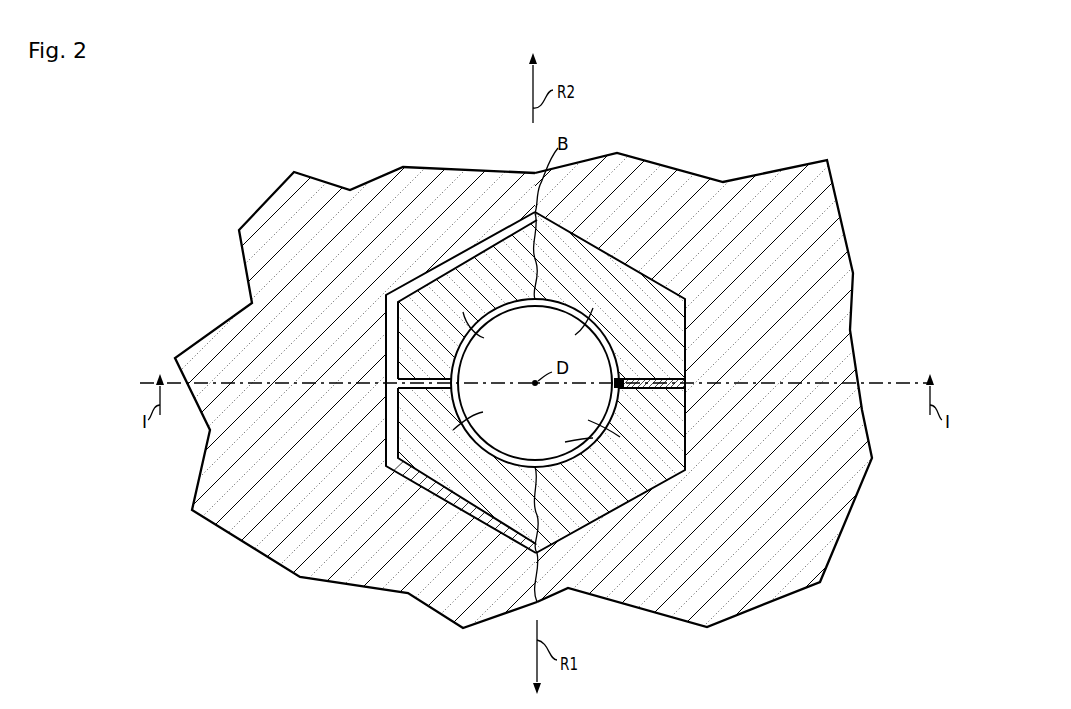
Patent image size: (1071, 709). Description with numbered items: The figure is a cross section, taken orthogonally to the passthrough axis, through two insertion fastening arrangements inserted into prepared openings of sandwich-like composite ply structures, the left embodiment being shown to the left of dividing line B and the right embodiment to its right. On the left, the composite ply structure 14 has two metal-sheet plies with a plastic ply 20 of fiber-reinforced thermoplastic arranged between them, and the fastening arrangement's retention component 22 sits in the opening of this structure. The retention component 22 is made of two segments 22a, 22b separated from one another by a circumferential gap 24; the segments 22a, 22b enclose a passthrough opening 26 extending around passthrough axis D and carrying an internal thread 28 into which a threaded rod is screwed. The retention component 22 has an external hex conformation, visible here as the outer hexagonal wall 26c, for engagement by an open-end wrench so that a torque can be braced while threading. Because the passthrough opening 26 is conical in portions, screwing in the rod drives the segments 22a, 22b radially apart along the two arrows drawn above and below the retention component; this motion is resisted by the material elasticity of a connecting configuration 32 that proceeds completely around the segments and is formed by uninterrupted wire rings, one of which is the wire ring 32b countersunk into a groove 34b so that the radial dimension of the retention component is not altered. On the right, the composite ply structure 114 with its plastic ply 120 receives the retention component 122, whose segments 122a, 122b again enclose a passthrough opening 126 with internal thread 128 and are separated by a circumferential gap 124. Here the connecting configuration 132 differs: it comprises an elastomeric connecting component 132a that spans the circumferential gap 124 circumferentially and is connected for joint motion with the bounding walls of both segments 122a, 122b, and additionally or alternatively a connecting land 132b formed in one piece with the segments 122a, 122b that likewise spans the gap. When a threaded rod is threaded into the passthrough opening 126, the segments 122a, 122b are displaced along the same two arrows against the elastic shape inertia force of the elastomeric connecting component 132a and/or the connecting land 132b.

The composite ply structure 14 is at (272, 160).
The plastic ply 20 is at (325, 195).
The retention component 22 is at (425, 234).
The segment 22a is at (480, 416).
The segment 22b is at (485, 331).
The circumferential gap 24 is at (447, 382).
The passthrough opening 26 is at (535, 383).
The outer hexagonal wall 26c is at (485, 238).
The internal thread 28 is at (518, 460).
The connecting configuration 32 is at (381, 324).
The wire ring 32b is at (396, 340).
The groove 34b is at (380, 420).
The composite ply structure 114 is at (657, 148).
The plastic ply 120 is at (737, 187).
The retention component 122 is at (650, 233).
The segment 122a is at (588, 422).
The segment 122b is at (571, 329).
The circumferential gap 124 is at (694, 383).
The passthrough opening 126 is at (546, 369).
The internal thread 128 is at (566, 442).
The connecting configuration 132 is at (653, 368).
The elastomeric connecting component 132a is at (660, 379).
The connecting land 132b is at (611, 384).